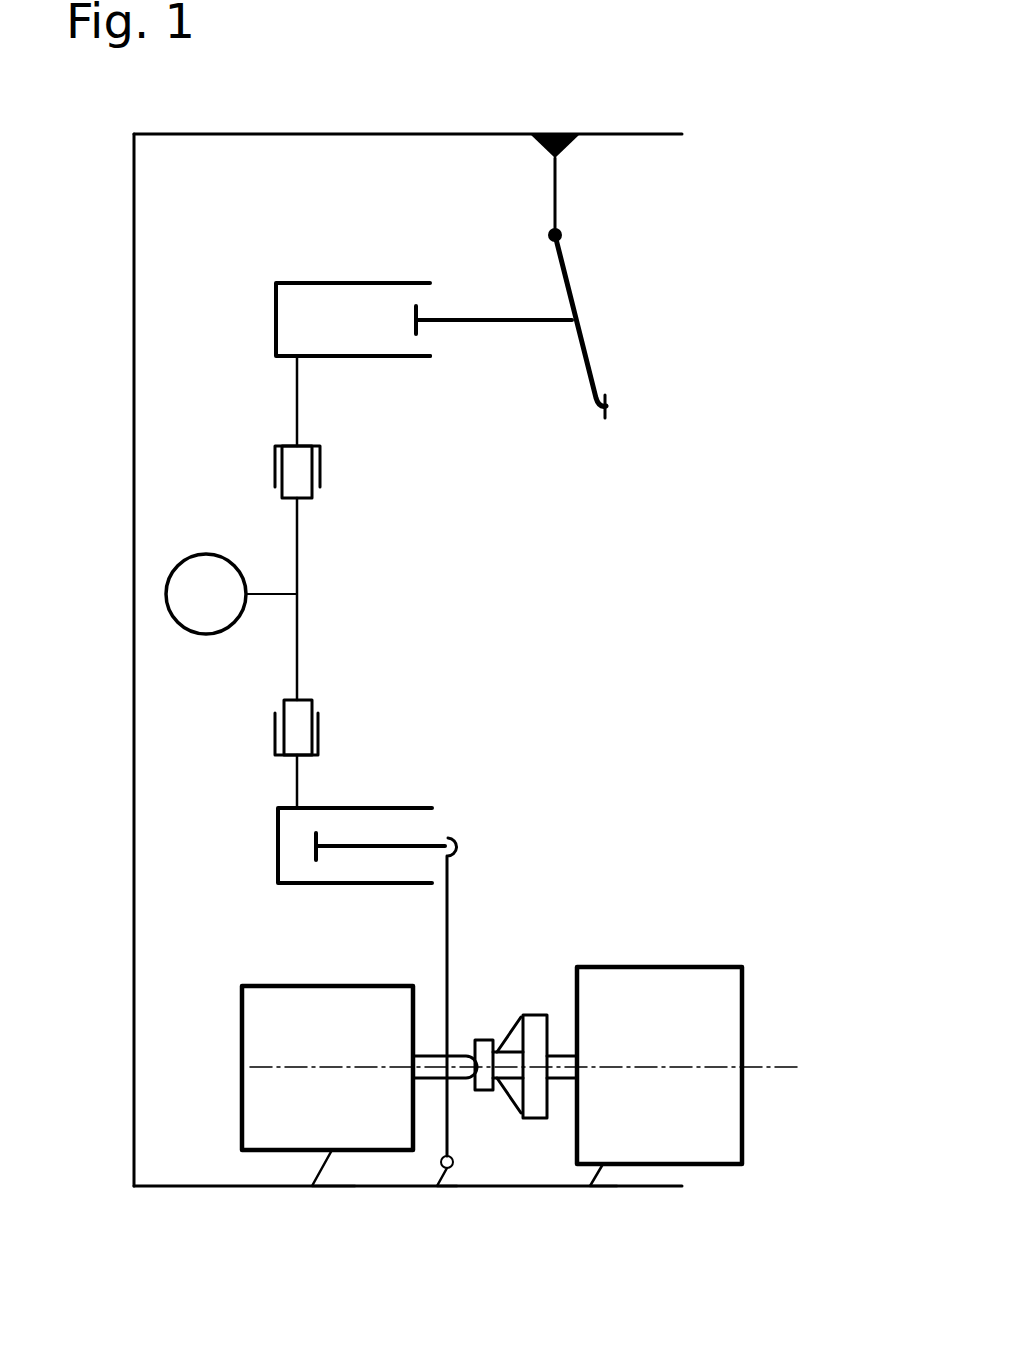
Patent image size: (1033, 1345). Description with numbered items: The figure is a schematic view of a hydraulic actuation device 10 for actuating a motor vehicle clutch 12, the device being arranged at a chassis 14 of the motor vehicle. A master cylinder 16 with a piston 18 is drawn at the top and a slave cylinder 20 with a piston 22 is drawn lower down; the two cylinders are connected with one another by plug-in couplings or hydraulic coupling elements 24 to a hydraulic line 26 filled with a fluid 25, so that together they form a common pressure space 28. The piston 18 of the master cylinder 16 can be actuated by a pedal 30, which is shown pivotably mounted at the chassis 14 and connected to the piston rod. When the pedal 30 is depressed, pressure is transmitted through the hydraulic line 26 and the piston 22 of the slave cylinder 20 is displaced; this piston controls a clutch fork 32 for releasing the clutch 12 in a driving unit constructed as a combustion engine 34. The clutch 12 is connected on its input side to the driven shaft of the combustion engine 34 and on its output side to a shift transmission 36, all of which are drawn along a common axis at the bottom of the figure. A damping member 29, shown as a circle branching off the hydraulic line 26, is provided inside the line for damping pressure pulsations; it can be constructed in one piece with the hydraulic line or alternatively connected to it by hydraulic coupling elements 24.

The hydraulic actuation device 10 is at (650, 665).
The motor vehicle clutch 12 is at (538, 1148).
The chassis 14 is at (383, 134).
The master cylinder 16 is at (342, 283).
The piston 18 is at (418, 312).
The slave cylinder 20 is at (277, 825).
The piston 22 is at (313, 857).
The hydraulic coupling elements 24 is at (312, 493).
The fluid 25 is at (355, 347).
The hydraulic line 26 is at (297, 565).
The common pressure space 28 is at (312, 318).
The damping member 29 is at (217, 612).
The pedal 30 is at (585, 362).
The clutch fork 32 is at (450, 962).
The combustion engine 34 is at (708, 1184).
The shift transmission 36 is at (268, 1172).